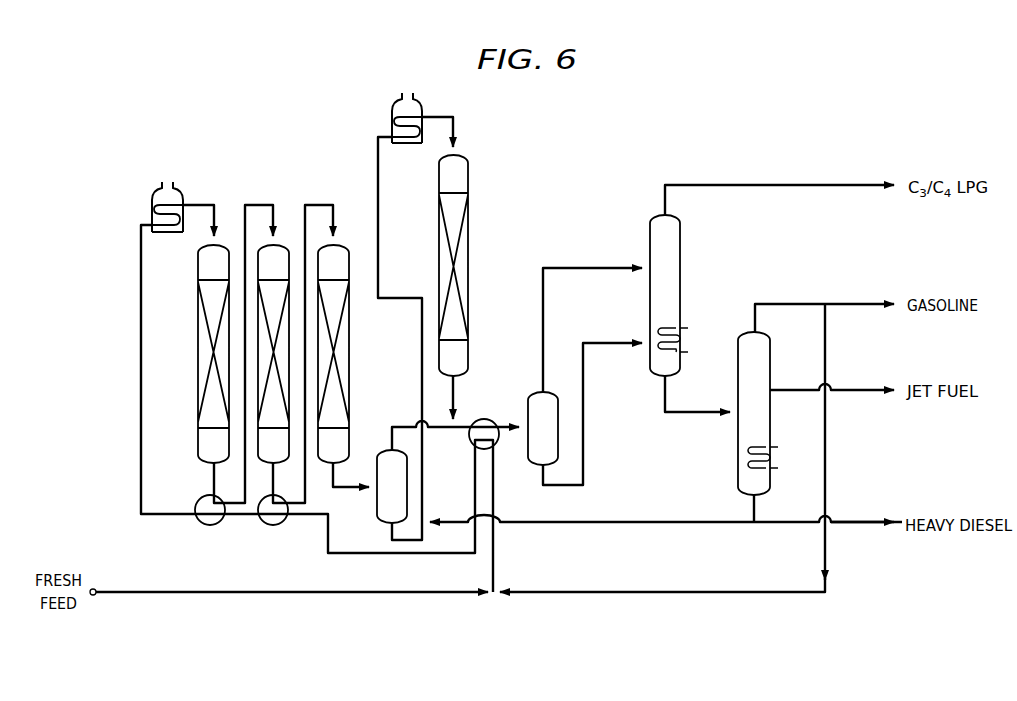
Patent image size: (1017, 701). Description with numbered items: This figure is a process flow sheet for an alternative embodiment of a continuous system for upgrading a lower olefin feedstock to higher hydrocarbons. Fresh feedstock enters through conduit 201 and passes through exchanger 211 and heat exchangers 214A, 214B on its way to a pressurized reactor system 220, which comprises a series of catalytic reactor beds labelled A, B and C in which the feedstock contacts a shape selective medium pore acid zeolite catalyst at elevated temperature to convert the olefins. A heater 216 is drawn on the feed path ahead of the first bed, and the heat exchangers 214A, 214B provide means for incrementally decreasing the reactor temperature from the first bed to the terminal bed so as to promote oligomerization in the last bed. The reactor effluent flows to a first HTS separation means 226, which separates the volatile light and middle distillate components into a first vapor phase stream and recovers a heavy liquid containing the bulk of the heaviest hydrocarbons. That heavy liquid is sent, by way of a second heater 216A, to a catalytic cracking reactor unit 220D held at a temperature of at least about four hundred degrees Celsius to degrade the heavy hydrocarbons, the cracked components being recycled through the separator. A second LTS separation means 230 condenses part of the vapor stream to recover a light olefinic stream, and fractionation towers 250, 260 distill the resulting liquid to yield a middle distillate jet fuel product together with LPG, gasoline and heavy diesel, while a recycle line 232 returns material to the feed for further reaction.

The conduit 201 is at (229, 591).
The exchanger 211 is at (483, 419).
The heat exchanger 214A is at (212, 524).
The heat exchanger 214B is at (276, 524).
The heater 216 is at (158, 190).
The heater 216A is at (400, 101).
The pressurized reactor system 220 is at (358, 198).
The reactor unit 220D is at (468, 179).
The first HTS separation means 226 is at (377, 514).
The second LTS separation means 230 is at (528, 396).
The recycle line 232 is at (704, 591).
The fractionation tower 250 is at (750, 334).
The fractionation tower 260 is at (660, 217).